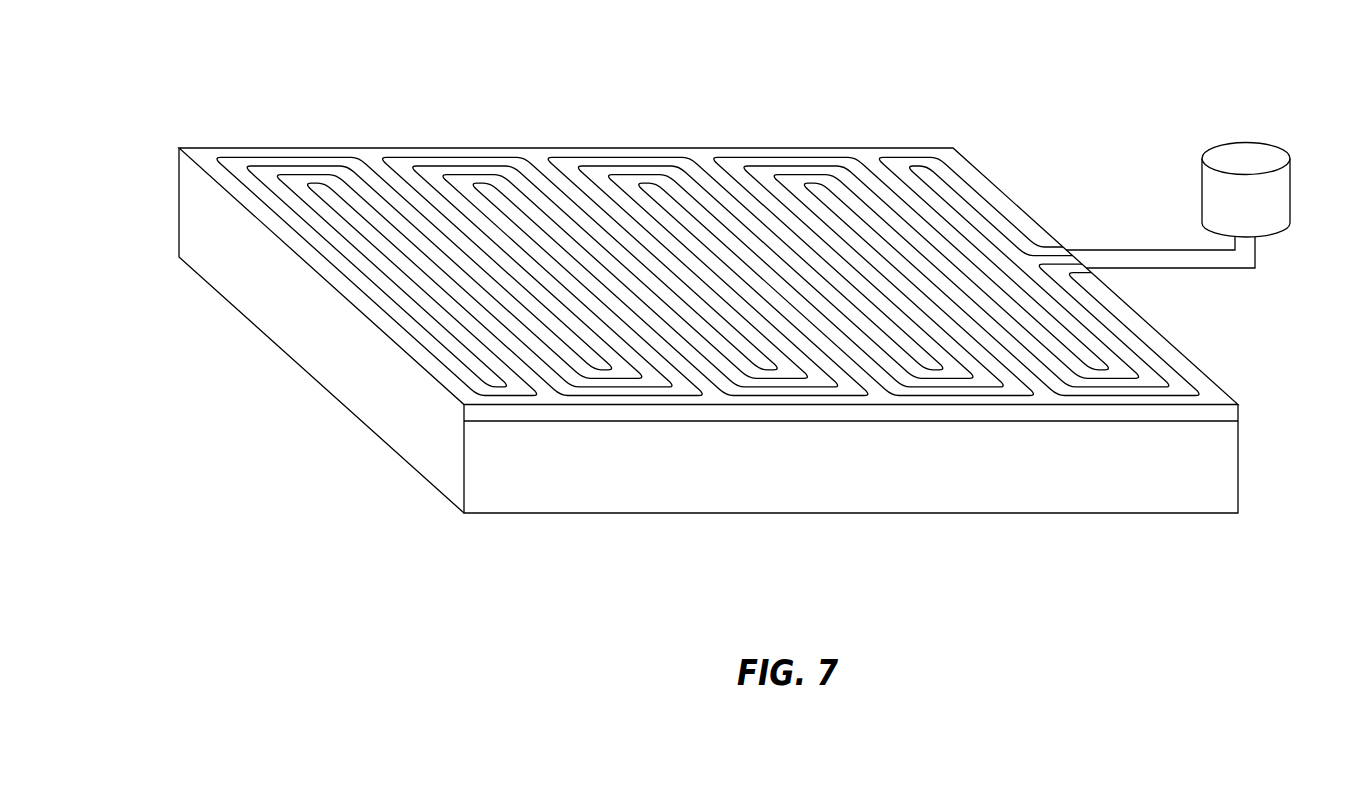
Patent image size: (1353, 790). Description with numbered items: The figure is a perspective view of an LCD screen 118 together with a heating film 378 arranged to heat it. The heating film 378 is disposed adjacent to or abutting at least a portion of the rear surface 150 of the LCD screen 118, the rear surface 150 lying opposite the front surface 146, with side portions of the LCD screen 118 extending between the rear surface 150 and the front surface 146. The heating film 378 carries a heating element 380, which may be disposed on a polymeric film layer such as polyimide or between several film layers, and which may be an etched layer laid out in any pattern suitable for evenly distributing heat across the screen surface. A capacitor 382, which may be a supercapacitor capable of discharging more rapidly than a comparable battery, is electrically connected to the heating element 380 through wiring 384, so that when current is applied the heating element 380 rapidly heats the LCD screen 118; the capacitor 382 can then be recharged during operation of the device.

The LCD screen 118 is at (218, 293).
The front surface 146 is at (523, 514).
The rear surface 150 is at (1199, 419).
The heating film 378 is at (178, 148).
The heating element 380 is at (408, 157).
The capacitor 382 is at (1218, 147).
The wiring 384 is at (1157, 249).